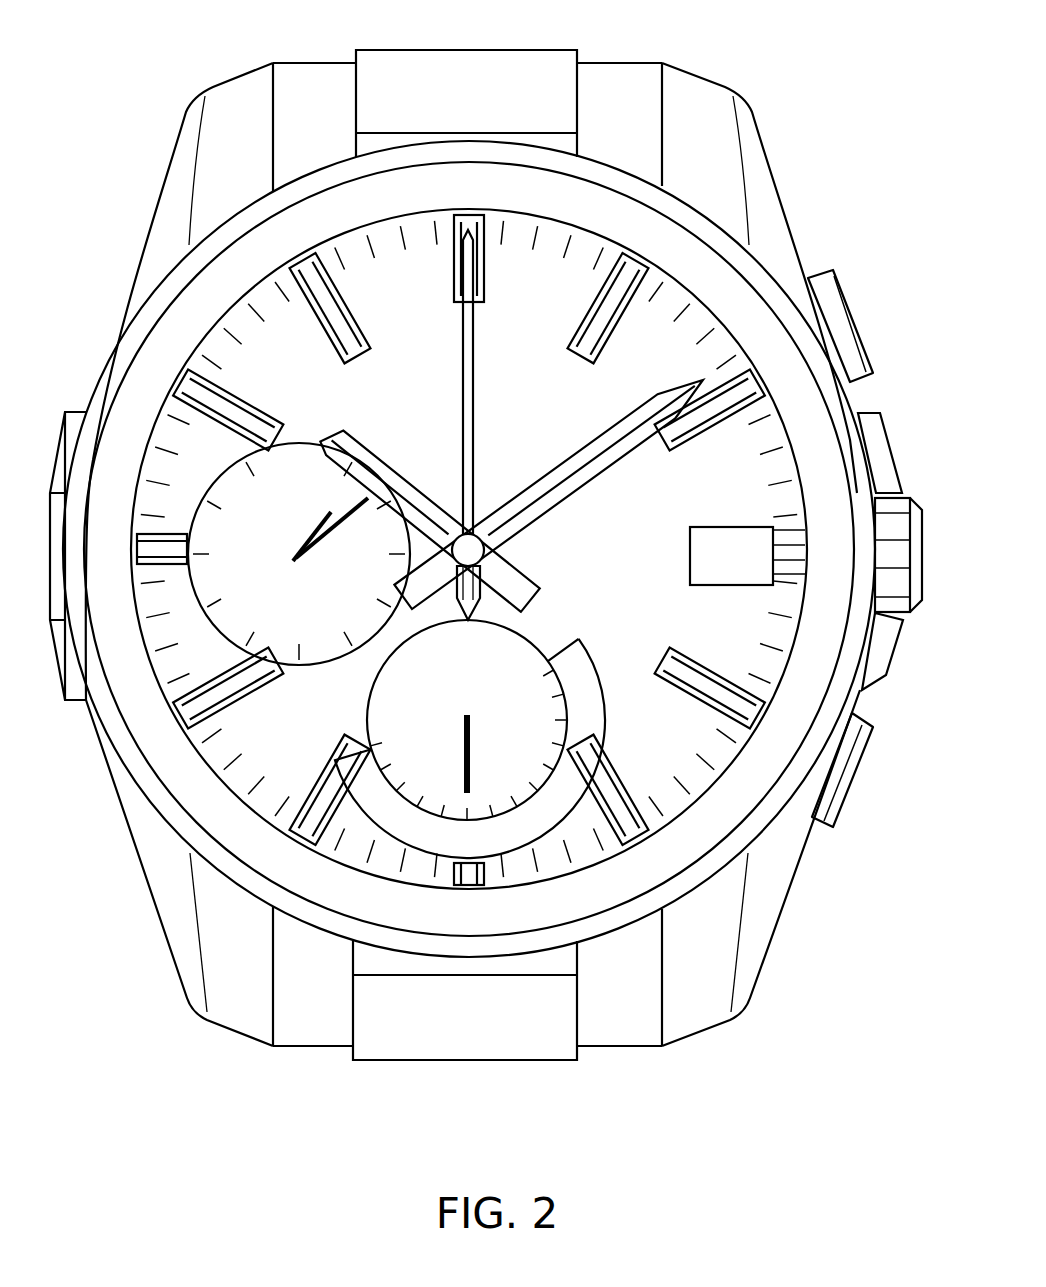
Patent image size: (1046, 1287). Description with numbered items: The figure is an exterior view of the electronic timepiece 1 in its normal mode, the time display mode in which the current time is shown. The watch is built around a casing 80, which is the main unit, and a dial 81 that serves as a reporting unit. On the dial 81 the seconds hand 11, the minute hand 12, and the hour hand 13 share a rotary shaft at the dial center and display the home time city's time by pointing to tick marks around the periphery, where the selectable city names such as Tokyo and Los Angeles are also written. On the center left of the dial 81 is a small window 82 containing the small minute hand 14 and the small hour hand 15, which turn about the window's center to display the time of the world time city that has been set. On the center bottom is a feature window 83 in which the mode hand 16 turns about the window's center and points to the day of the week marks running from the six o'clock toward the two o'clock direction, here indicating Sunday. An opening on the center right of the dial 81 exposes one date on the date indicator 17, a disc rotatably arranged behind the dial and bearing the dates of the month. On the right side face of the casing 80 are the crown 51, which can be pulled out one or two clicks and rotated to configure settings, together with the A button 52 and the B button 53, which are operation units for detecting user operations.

The electronic timepiece 1 is at (186, 120).
The seconds hand 11 is at (474, 350).
The minute hand 12 is at (655, 387).
The hour hand 13 is at (326, 432).
The small minute hand 14 is at (262, 655).
The small hour hand 15 is at (305, 533).
The mode hand 16 is at (466, 795).
The date indicator 17 is at (717, 526).
The crown 51 is at (926, 557).
The A button 52 is at (857, 318).
The B button 53 is at (857, 773).
The casing 80 is at (188, 248).
The dial 81 is at (242, 338).
The small window 82 is at (250, 660).
The feature window 83 is at (334, 818).